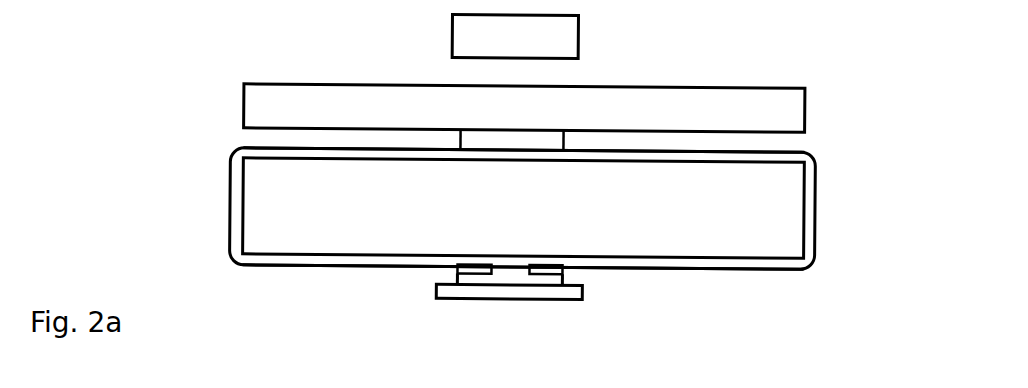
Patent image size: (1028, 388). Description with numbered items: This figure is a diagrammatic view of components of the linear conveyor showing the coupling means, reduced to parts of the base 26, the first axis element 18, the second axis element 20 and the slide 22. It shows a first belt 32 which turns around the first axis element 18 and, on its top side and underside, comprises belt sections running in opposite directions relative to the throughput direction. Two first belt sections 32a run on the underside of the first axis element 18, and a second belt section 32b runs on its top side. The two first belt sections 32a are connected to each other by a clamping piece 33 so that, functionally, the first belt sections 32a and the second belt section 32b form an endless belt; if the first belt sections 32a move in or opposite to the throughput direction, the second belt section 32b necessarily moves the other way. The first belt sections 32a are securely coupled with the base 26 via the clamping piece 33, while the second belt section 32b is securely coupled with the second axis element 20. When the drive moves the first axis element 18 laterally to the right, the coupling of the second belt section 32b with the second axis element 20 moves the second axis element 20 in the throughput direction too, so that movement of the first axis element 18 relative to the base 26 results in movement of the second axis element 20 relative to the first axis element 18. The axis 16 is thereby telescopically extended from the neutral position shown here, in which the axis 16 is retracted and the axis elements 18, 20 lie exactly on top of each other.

The axis 16 is at (890, 228).
The first axis element 18 is at (529, 216).
The second axis element 20 is at (792, 110).
The slide 22 is at (555, 42).
The base 26 is at (577, 298).
The first belt 32 is at (815, 190).
The first belt sections 32a is at (307, 263).
The second belt section 32b is at (283, 148).
The clamping piece 33 is at (455, 275).